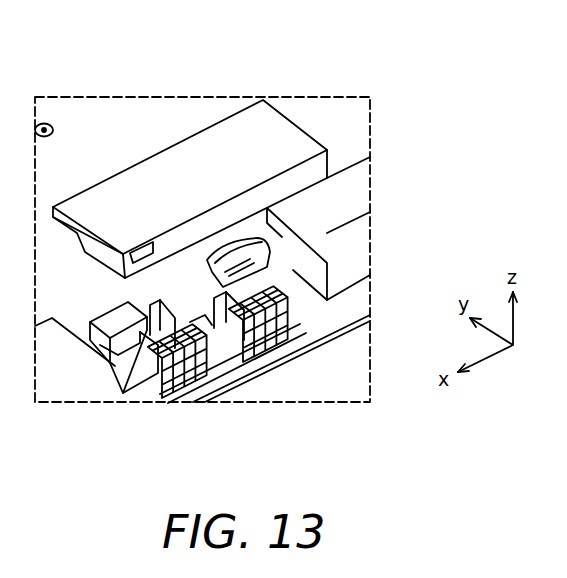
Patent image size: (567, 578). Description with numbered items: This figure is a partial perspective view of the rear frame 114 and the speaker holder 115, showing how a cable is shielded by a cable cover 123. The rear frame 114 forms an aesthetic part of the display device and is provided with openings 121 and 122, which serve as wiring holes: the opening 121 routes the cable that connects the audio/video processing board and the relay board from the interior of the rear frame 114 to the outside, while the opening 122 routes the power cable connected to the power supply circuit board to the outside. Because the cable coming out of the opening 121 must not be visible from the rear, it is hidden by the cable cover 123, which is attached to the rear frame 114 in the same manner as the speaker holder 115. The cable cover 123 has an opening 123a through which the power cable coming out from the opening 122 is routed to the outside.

The rear frame 114 is at (346, 110).
The speaker holder 115 is at (363, 198).
The opening 121 is at (278, 241).
The opening 122 is at (96, 328).
The cable cover 123 is at (190, 151).
The opening 123a is at (140, 247).